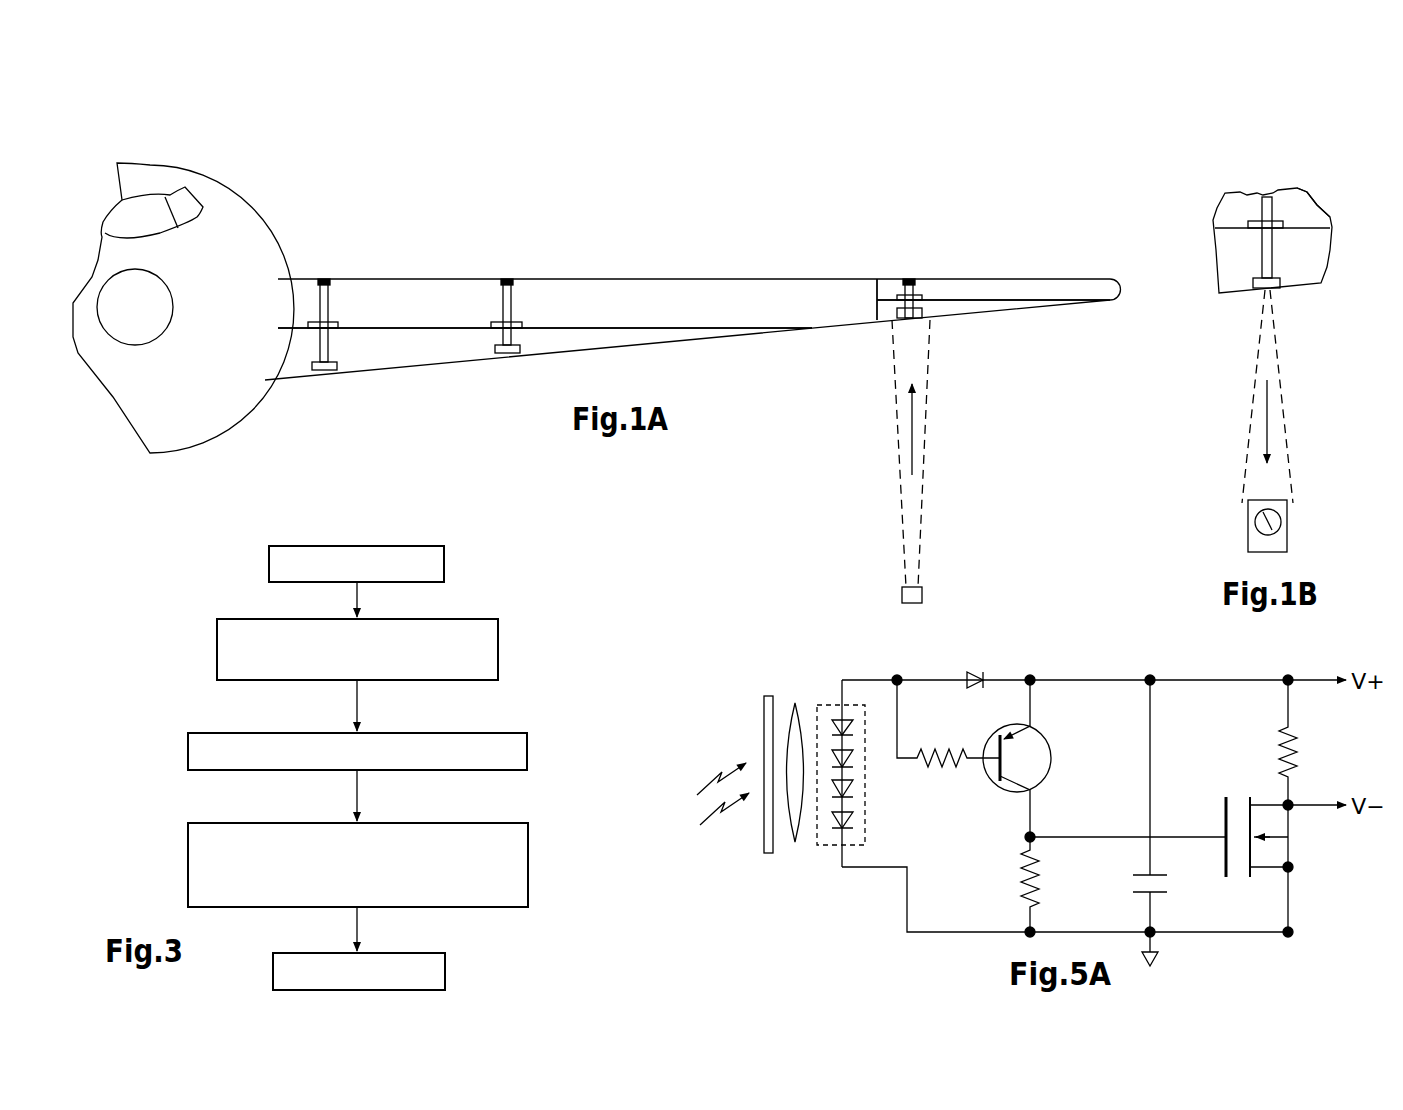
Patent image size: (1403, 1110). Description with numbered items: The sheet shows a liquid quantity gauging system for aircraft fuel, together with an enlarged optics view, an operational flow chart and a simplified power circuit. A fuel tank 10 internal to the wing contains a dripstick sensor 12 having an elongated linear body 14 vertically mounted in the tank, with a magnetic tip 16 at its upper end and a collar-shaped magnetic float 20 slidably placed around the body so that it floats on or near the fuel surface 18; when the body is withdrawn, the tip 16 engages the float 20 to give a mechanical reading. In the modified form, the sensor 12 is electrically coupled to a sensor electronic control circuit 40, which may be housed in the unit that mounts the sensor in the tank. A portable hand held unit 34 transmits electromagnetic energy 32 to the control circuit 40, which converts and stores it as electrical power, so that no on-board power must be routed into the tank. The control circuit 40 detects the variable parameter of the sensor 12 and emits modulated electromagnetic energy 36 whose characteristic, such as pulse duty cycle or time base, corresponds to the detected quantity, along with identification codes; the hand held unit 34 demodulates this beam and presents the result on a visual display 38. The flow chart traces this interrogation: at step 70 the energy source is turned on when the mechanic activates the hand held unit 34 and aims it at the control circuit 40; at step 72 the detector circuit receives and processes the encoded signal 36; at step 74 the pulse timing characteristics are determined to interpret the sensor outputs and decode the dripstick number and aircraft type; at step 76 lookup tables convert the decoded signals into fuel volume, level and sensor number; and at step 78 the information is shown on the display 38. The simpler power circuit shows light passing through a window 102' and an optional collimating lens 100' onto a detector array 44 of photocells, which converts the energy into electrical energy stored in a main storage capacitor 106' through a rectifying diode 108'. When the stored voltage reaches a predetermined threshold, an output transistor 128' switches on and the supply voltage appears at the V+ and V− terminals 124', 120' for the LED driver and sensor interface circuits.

In FIG. 1A, the fuel tank 10 is at (673, 288).
In FIG. 1B, the fuel tank 10 is at (1225, 213).
In FIG. 1A, the dripstick sensor 12 is at (342, 300).
In FIG. 1B, the dripstick sensor 12 is at (1298, 213).
In FIG. 1A, the elongated linear body 14 is at (320, 340).
In FIG. 1B, the elongated linear body 14 is at (1273, 260).
In FIG. 1A, the magnetic tip 16 is at (320, 283).
In FIG. 1A, the fuel surface 18 is at (580, 327).
In FIG. 1B, the fuel surface 18 is at (1330, 215).
In FIG. 1A, the magnetic float 20 is at (338, 325).
In FIG. 1B, the magnetic float 20 is at (1260, 215).
In FIG. 1A, the sensor electronic control circuit 40 is at (348, 352).
In FIG. 1B, the sensor electronic control circuit 40 is at (1246, 280).
In FIG. 1A, the electromagnetic energy 32 is at (931, 440).
In FIG. 1A, the remote hand held unit 34 is at (929, 597).
In FIG. 1B, the remote hand held unit 34 is at (1243, 509).
In FIG. 1B, the modulated electromagnetic energy 36 is at (1281, 376).
In FIG. 1B, the visual display 38 is at (1287, 511).
In FIG. 3, the energy source activation step 70 is at (445, 565).
In FIG. 3, the signal receiving step 72 is at (499, 650).
In FIG. 3, the pulse timing determination step 74 is at (528, 755).
In FIG. 3, the conversion step 76 is at (529, 868).
In FIG. 3, the display step 78 is at (446, 970).
In FIG. 5A, the detector array 44 is at (813, 849).
In FIG. 5A, the lens 100' is at (800, 734).
In FIG. 5A, the window 102' is at (742, 747).
In FIG. 5A, the main storage capacitor 106' is at (1115, 806).
In FIG. 5A, the rectifying diode 108' is at (950, 660).
In FIG. 5A, the V− terminal 120' is at (1257, 888).
In FIG. 5A, the V+ terminal 124' is at (1249, 724).
In FIG. 5A, the output transistor 128' is at (1236, 815).